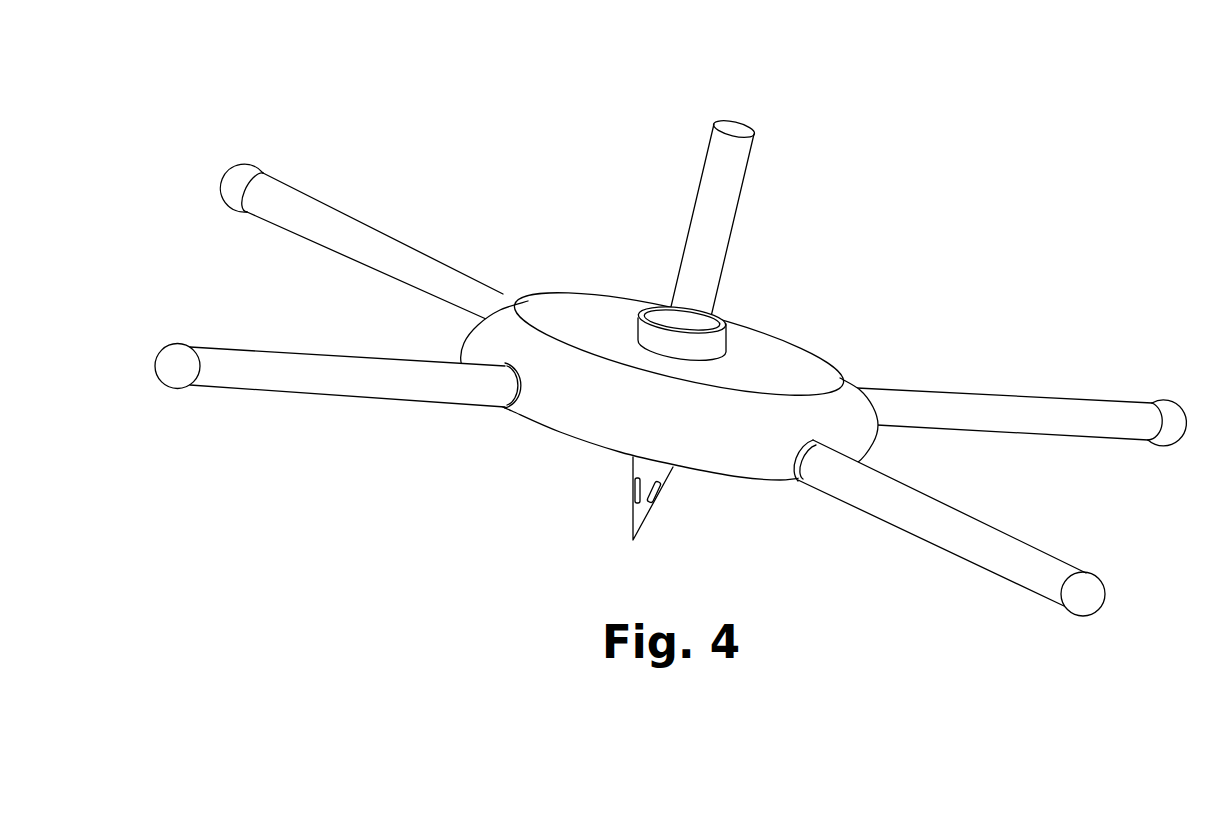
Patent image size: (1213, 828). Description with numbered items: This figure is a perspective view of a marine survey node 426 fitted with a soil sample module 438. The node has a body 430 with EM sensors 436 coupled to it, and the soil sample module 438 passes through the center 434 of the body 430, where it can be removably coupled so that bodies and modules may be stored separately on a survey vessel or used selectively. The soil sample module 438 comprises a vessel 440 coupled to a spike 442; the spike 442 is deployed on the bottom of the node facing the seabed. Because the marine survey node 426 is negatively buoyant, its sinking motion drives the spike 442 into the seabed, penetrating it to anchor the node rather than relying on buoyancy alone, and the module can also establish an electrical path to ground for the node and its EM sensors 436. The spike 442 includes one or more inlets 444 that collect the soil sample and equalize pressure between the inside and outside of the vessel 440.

The marine survey node 426 is at (670, 342).
The body 430 is at (793, 358).
The center 434 is at (717, 313).
The EM sensors 436 is at (1057, 397).
The soil sample module 438 is at (669, 195).
The vessel 440 is at (688, 232).
The spike 442 is at (633, 460).
The inlets 444 is at (658, 500).